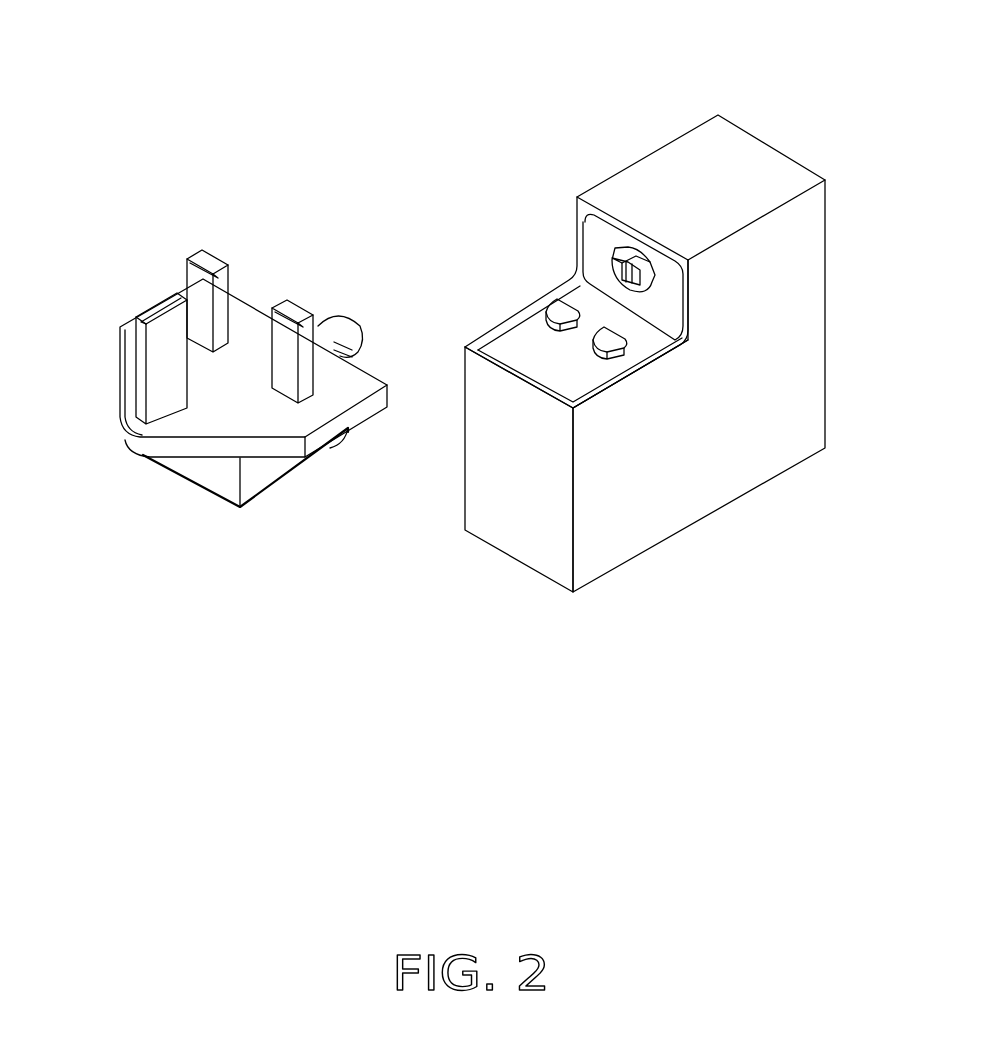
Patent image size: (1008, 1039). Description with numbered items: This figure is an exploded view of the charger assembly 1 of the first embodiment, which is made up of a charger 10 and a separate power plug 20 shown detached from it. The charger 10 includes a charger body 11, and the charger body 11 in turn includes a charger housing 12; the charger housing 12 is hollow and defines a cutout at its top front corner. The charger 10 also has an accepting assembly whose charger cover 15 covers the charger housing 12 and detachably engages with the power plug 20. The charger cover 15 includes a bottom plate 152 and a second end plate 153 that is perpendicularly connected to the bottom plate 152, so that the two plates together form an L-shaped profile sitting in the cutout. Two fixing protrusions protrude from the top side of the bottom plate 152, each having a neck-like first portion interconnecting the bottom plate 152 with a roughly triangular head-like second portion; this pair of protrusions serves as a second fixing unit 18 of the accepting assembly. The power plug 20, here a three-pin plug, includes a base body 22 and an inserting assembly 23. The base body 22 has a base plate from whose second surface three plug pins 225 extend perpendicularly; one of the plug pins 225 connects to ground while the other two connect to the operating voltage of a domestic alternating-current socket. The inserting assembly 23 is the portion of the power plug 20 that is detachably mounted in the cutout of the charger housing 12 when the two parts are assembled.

The charger assembly 1 is at (452, 43).
The charger 10 is at (747, 106).
The charger body 11 is at (828, 228).
The charger housing 12 is at (737, 460).
The charger cover 15 is at (520, 119).
The bottom plate 152 is at (533, 328).
The second end plate 153 is at (594, 233).
The second fixing unit 18 is at (608, 345).
The power plug 20 is at (150, 270).
The base body 22 is at (183, 422).
The plug pins 225 is at (165, 335).
The inserting assembly 23 is at (234, 512).